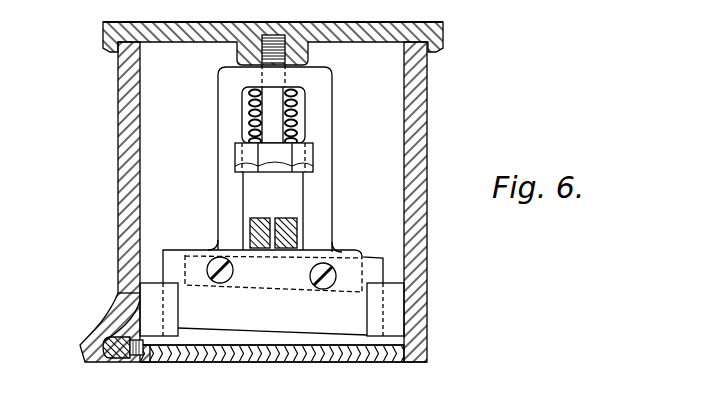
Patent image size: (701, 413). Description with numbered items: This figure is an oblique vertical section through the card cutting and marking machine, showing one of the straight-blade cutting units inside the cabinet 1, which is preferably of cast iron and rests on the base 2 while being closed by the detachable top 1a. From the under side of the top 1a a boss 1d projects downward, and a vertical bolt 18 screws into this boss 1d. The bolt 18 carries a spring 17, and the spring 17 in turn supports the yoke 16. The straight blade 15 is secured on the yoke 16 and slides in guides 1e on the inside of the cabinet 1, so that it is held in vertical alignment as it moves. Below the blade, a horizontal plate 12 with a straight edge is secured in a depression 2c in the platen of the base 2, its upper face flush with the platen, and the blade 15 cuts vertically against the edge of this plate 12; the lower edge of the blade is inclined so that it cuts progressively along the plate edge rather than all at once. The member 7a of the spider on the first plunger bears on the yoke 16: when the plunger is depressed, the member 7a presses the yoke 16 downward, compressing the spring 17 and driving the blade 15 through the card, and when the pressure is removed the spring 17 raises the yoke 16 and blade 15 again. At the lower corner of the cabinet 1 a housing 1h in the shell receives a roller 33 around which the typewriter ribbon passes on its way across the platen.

The cabinet 1 is at (418, 124).
The detachable top 1a is at (443, 30).
The boss 1d is at (302, 53).
The guides 1e is at (147, 303).
The housing 1h is at (92, 337).
The base 2 is at (415, 360).
The depression 2c is at (225, 362).
The spider member 7a is at (283, 228).
The horizontal plate 12 is at (270, 347).
The straight blade 15 is at (370, 265).
The yoke 16 is at (322, 120).
The spring 17 is at (292, 108).
The vertical bolt 18 is at (273, 136).
The roller 33 is at (122, 355).